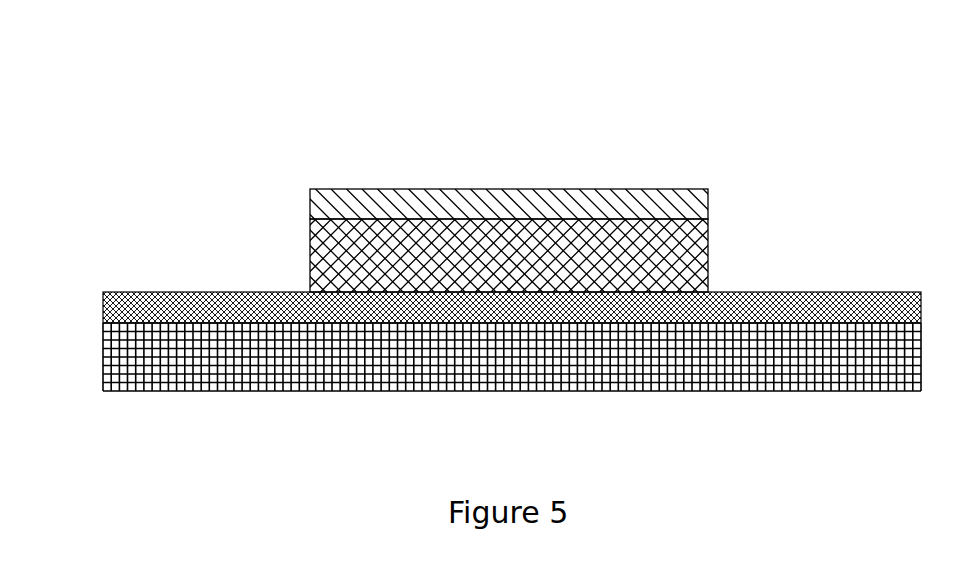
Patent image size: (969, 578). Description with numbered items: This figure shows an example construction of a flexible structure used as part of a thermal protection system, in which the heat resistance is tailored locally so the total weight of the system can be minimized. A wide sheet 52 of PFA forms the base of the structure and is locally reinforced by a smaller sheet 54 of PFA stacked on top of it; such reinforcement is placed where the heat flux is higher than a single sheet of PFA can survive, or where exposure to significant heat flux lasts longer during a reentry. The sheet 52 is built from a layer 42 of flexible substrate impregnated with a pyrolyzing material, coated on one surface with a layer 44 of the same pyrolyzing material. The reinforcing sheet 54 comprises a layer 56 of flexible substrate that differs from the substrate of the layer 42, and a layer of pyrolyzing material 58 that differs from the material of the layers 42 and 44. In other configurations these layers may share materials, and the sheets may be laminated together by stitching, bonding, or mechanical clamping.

The layer of flexible substrate impregnated with a pyrolyzing material 42 is at (860, 315).
The layer of pyrolyzing material 44 is at (745, 302).
The sheet of PFA 52 is at (504, 289).
The reinforcing sheet of PFA 54 is at (509, 189).
The layer of flexible substrate 56 is at (573, 213).
The layer of pyrolyzing material 58 is at (462, 190).